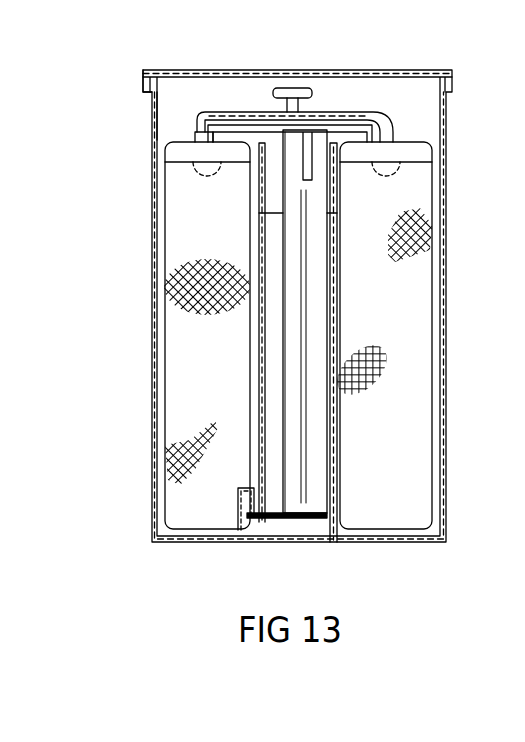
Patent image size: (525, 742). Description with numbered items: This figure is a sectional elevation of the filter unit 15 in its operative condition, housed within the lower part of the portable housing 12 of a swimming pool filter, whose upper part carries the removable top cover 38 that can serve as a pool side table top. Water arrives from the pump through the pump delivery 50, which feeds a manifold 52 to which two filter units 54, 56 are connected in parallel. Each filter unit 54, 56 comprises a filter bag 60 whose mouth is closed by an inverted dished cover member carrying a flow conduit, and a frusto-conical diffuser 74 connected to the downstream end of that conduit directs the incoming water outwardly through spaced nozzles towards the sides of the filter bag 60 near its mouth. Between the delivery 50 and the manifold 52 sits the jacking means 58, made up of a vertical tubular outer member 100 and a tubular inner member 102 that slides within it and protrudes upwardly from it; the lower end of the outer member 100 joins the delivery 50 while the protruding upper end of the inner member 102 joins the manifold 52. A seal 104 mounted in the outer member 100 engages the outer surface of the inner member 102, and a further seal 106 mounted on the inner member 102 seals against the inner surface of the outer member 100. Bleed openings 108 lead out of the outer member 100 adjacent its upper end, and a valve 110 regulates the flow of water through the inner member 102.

The portable housing 12 is at (138, 157).
The filter unit 15 is at (197, 108).
The top cover 38 is at (403, 70).
The pump delivery 50 is at (238, 497).
The manifold 52 is at (242, 112).
The filter unit 54 is at (157, 274).
The filter unit 56 is at (441, 262).
The jacking means 58 is at (252, 365).
The filter bag 60 is at (183, 335).
The diffuser 74 is at (203, 184).
The tubular outer member 100 is at (338, 425).
The tubular inner member 102 is at (315, 468).
The seal 104 is at (312, 143).
The seal 106 is at (322, 540).
The bleed openings 108 is at (265, 213).
The valve 110 is at (296, 78).